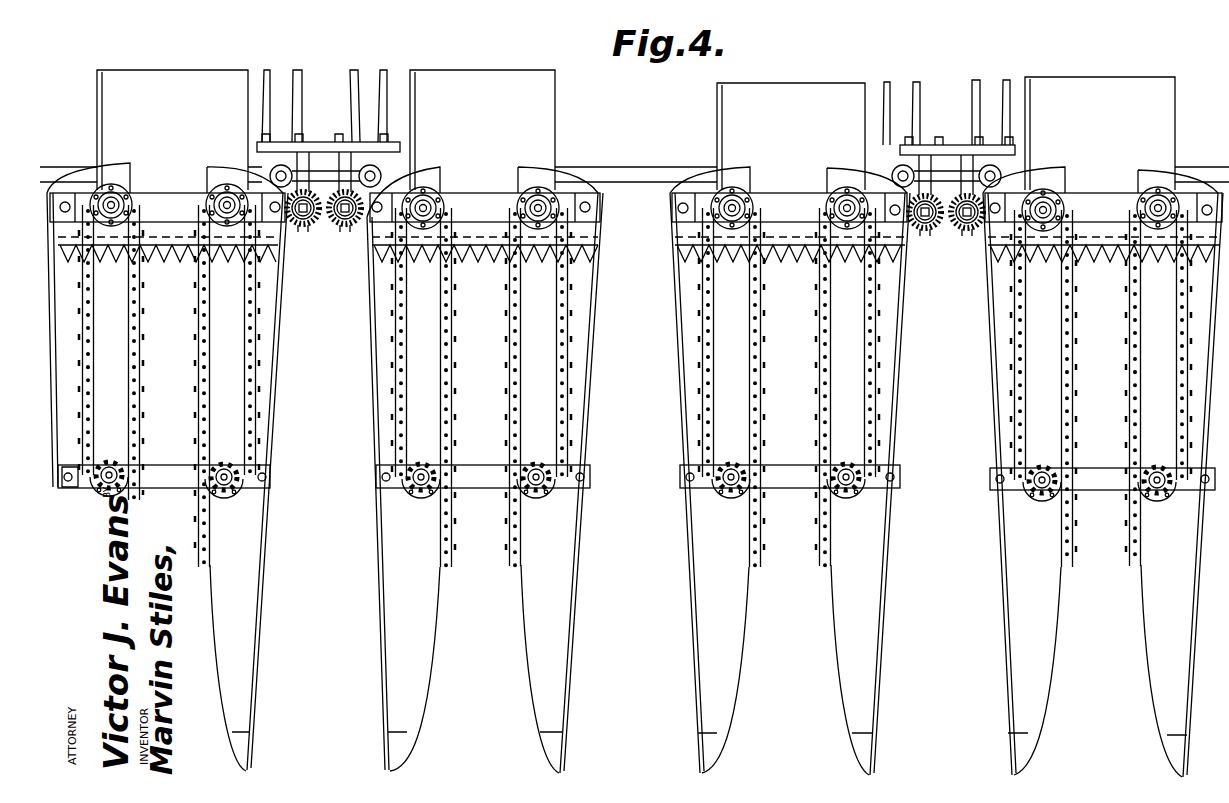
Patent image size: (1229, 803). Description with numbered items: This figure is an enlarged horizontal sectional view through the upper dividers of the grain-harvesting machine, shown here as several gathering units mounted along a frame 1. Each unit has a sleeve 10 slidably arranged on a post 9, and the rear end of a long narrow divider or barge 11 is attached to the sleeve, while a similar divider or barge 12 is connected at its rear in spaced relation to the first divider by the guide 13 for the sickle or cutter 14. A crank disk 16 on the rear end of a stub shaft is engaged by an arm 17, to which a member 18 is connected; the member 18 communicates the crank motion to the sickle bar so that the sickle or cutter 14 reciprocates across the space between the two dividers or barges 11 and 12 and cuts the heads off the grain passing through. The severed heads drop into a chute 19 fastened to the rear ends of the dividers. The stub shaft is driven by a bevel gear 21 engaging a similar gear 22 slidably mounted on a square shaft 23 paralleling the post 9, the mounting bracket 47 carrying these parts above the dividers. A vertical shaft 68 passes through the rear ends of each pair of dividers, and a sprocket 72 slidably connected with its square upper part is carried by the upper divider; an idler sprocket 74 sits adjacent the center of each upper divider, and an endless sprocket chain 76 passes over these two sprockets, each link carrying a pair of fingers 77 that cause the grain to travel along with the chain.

The main frame bar 1 is at (627, 180).
The post 9 is at (1000, 178).
The sleeve 10 is at (997, 167).
The divider or barge 11 is at (1153, 635).
The divider or barge 12 is at (1022, 635).
The guide 13 is at (1107, 257).
The sickle or cutter 14 is at (1130, 280).
The crank disk 16 is at (943, 143).
The arm 17 is at (983, 145).
The member 18 is at (390, 160).
The chute 19 is at (636, 130).
The bevel gear 21 is at (923, 220).
The gear 22 is at (920, 230).
The square shaft 23 is at (925, 228).
The bracket bolt 47 is at (980, 107).
The vertical shaft 68 is at (1140, 200).
The sprocket 72 is at (1130, 215).
The idler sprocket 74 is at (1135, 467).
The sprocket chain 76 is at (1130, 372).
The fingers 77 is at (1130, 394).